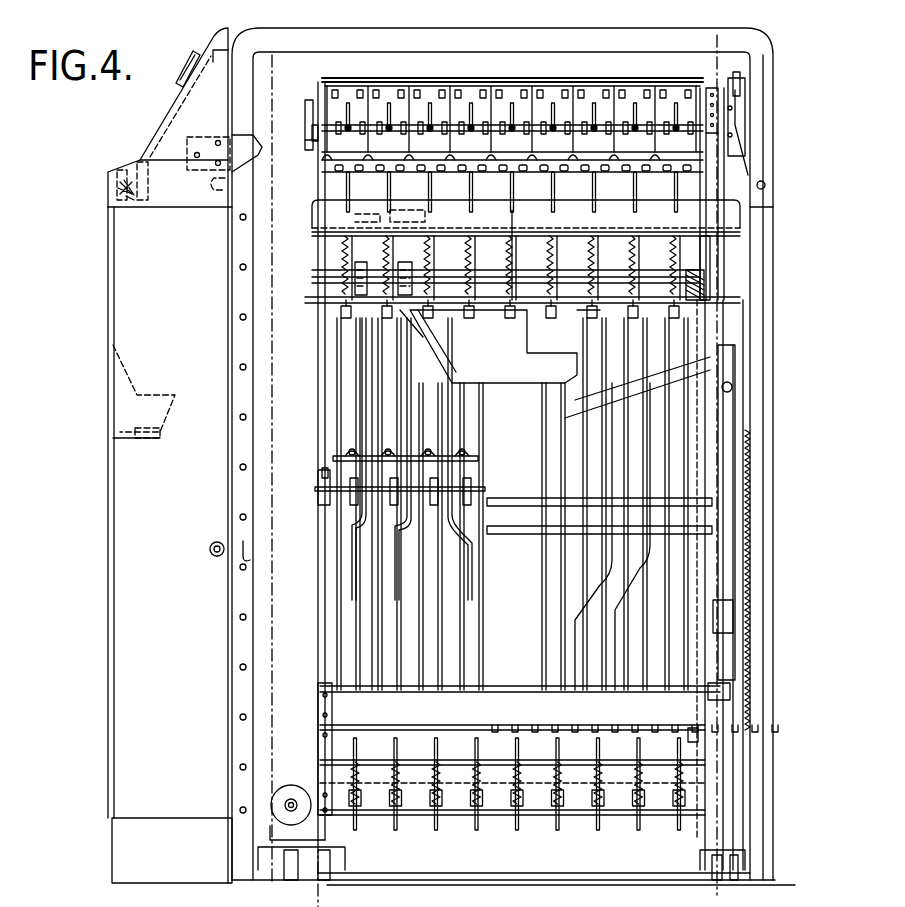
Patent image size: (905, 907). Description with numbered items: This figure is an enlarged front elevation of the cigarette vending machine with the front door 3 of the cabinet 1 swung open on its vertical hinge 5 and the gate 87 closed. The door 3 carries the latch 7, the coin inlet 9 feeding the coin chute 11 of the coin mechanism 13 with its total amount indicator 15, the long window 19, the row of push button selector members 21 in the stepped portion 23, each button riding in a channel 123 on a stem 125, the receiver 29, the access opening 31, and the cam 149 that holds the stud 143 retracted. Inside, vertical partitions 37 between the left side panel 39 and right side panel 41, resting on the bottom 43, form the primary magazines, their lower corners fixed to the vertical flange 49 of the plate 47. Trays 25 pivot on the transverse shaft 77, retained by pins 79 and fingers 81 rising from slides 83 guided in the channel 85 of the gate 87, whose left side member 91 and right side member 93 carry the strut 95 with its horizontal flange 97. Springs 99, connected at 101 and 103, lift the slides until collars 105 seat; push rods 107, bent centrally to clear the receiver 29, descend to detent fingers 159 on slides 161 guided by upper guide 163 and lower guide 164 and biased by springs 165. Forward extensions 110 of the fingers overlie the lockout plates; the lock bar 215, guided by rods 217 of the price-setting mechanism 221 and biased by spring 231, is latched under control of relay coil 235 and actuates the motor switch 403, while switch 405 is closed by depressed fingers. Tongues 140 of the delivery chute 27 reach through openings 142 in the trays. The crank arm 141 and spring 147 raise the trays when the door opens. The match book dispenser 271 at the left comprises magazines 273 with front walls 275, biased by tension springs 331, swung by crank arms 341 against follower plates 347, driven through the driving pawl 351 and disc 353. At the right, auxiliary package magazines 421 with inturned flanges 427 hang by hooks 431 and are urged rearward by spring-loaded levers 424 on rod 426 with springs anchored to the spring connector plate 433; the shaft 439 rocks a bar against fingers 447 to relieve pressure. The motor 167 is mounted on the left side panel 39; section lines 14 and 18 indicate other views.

The cabinet 1 is at (205, 40).
The front door 3 is at (115, 562).
The vertical hinge 5 is at (247, 450).
The latch 7 is at (212, 551).
The coin inlet 9 is at (188, 70).
The coin chute 11 is at (745, 80).
The coin mechanism 13 is at (752, 168).
The section line 14 is at (268, 62).
The total amount indicator 15 is at (710, 90).
The section line 18 is at (690, 47).
The long window 19 is at (172, 108).
The push button selector members 21 is at (125, 168).
The stepped portion 23 is at (140, 160).
The display tray 25 is at (422, 80).
The delivery chute 27 is at (470, 380).
The receiver 29 is at (140, 440).
The access opening 31 is at (106, 395).
The vertical partitions 37 is at (530, 675).
The left side panel 39 is at (328, 650).
The right side panel 41 is at (697, 700).
The bottom 43 is at (515, 880).
The plate 47 is at (420, 742).
The vertical flange 49 is at (448, 735).
The transverse shaft 77 is at (320, 112).
The pins 79 is at (548, 115).
The fingers 81 is at (635, 150).
The slides 83 is at (550, 257).
The channel 85 is at (318, 300).
The gate 87 is at (697, 468).
The left vertical side member 91 is at (345, 630).
The right vertical side member 93 is at (710, 635).
The angle-shaped strut 95 is at (325, 690).
The horizontal flange 97 is at (325, 725).
The tension springs 99 is at (630, 253).
The spring connection 101 is at (555, 275).
The spring connection 103 is at (630, 232).
The collars 105 is at (340, 323).
The push rods 107 is at (410, 400).
The forward extensions 110 is at (512, 215).
The channel 123 is at (115, 190).
The stem 125 is at (128, 200).
The tongues 140 is at (393, 178).
The crank arm 141 is at (302, 128).
The openings 142 is at (560, 92).
The stud 143 is at (303, 138).
The spring 147 is at (310, 143).
The cam 149 is at (257, 148).
The detent fingers 159 is at (395, 815).
The slide 161 is at (465, 815).
The upper guide 163 is at (700, 770).
The lower guide 164 is at (705, 800).
The springs 165 is at (700, 778).
The motor 167 is at (275, 805).
The lock bar 215 is at (335, 243).
The rods 217 is at (380, 262).
The price-setting mechanism 221 is at (445, 322).
The spring 231 is at (688, 230).
The relay coil 235 is at (372, 200).
The match book dispenser 271 is at (343, 405).
The match book magazines 273 is at (375, 360).
The front wall 275 is at (375, 587).
The tension springs 331 is at (345, 450).
The crank arms 341 is at (360, 468).
The follower plates 347 is at (352, 507).
The driving pawl 351 is at (320, 498).
The disc 353 is at (322, 473).
The motor switch 403 is at (410, 262).
The push-button controlled switch 405 is at (425, 214).
The auxiliary package magazines 421 is at (550, 385).
The spring-loaded levers 424 is at (505, 565).
The transverse rod 426 is at (505, 500).
The inturned flanges 427 is at (527, 430).
The hook 431 is at (553, 495).
The spring connector plate 433 is at (668, 495).
The transverse shaft 439 is at (500, 780).
The fingers 447 is at (698, 733).